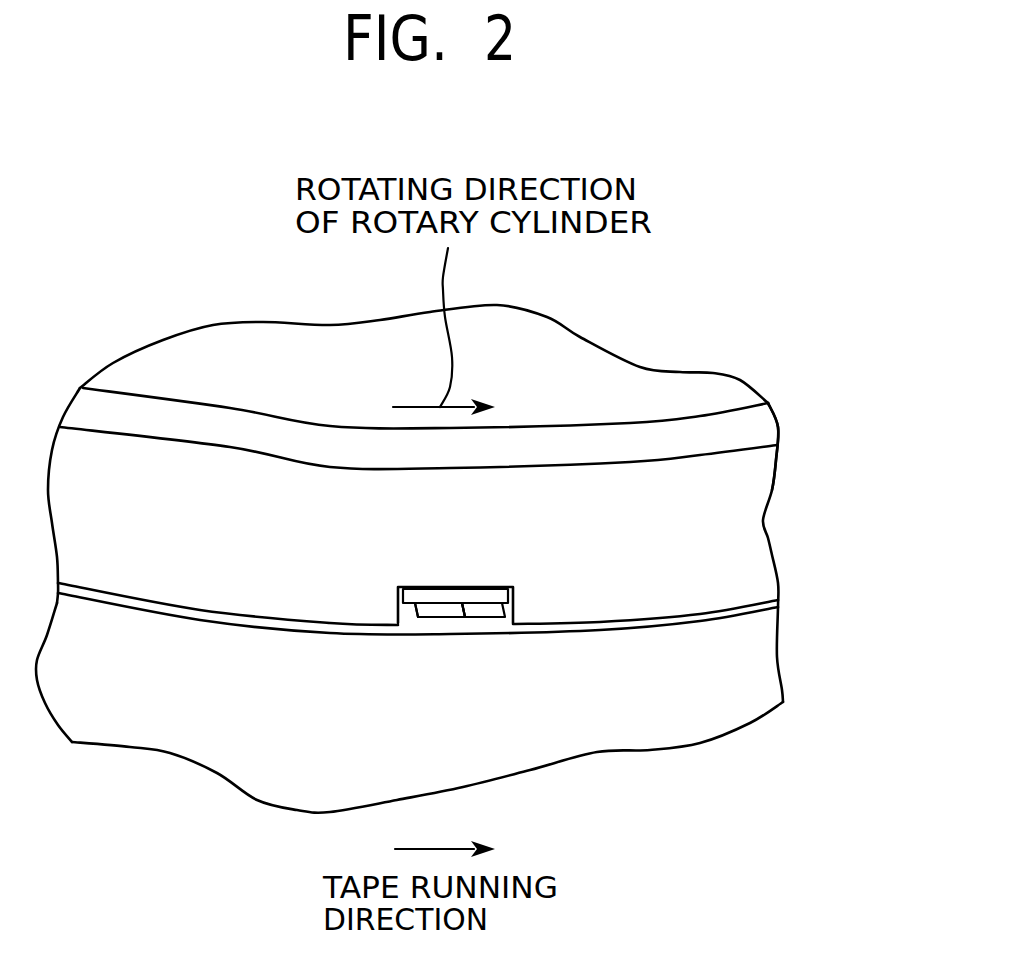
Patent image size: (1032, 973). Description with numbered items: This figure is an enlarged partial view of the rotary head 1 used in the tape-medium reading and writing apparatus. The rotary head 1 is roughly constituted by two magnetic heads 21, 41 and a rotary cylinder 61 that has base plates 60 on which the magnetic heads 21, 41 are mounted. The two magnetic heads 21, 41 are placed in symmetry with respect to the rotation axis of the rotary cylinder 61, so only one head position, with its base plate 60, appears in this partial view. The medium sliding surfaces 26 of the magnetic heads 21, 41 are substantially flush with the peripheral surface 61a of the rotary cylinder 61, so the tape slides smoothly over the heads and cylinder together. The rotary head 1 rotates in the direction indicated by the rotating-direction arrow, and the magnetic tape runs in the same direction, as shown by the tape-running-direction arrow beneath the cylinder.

The rotary head 1 is at (626, 390).
The base plate 60 is at (447, 587).
The rotary cylinder 61 is at (768, 539).
The peripheral surface 61a is at (745, 476).
The magnetic head 21 is at (440, 612).
The magnetic head 41 is at (440, 610).
The medium sliding surface 26 is at (485, 612).